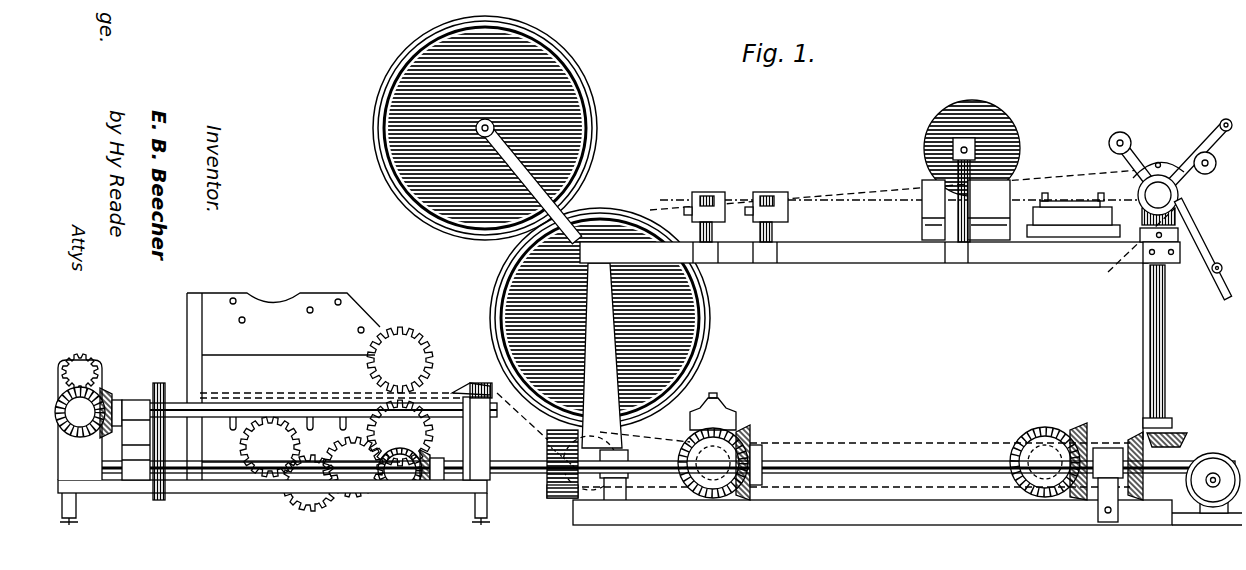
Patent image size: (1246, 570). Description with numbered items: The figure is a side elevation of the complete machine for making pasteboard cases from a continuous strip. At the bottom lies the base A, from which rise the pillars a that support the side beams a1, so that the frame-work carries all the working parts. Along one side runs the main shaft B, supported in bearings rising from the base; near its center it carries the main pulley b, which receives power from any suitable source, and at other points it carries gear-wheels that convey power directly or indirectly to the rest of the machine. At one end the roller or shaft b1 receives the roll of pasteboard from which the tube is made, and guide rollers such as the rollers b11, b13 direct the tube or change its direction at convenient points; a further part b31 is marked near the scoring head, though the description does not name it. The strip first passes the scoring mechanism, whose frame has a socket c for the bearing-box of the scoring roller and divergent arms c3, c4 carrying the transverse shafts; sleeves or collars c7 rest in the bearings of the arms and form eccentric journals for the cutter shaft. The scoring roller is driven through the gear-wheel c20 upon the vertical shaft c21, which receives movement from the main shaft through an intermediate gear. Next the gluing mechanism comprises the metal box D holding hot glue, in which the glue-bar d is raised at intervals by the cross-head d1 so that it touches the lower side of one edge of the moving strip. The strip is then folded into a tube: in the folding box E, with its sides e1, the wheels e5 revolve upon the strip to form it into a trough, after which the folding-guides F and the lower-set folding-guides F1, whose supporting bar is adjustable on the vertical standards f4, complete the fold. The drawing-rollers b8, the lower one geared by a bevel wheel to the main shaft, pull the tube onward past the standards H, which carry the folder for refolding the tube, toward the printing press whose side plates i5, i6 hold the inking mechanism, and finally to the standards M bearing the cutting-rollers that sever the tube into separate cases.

The pillars a is at (1143, 396).
The side beams a1 is at (864, 252).
The base A is at (907, 512).
The main shaft B is at (667, 457).
The main pulley b is at (547, 489).
The guide roller b13 is at (553, 500).
The drawing-rollers b8 is at (728, 448).
The guide roller b11 is at (1040, 448).
The roller b31 is at (1212, 269).
The roller or shaft b1 is at (1226, 290).
The socket c is at (1180, 197).
The divergent arm c3 is at (1133, 150).
The divergent arm c4 is at (1213, 152).
The sleeves or collars c7 is at (1216, 163).
The gear-wheel c20 is at (1178, 213).
The vertical shaft c21 is at (1165, 289).
The glue-bar d is at (1070, 214).
The glue box D is at (1073, 222).
The cross-head d1 is at (1095, 200).
The folding wheels e5 is at (970, 94).
The folding box E is at (966, 190).
The sides of folding box e1 is at (935, 190).
The folding-guides F is at (796, 186).
The folding-guides F1 is at (740, 186).
The vertical standards f4 is at (712, 232).
The standards H is at (472, 431).
The standards M is at (110, 427).
The side plate i6 is at (293, 386).
The side plate i5 is at (327, 419).